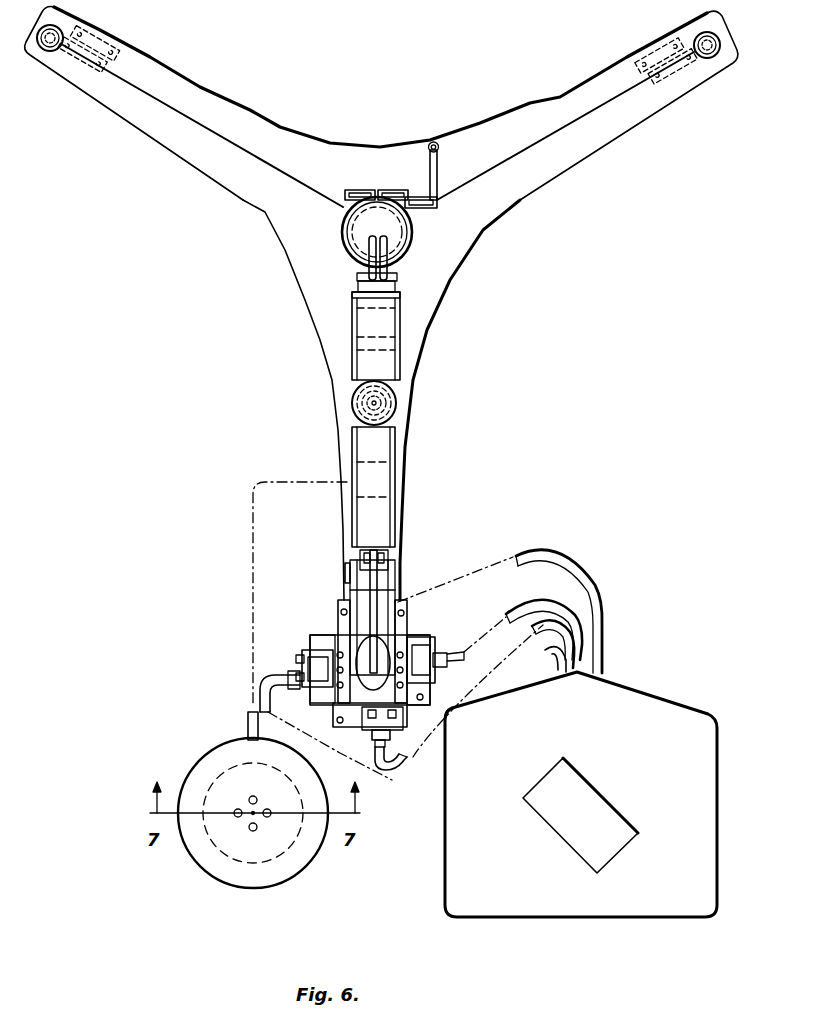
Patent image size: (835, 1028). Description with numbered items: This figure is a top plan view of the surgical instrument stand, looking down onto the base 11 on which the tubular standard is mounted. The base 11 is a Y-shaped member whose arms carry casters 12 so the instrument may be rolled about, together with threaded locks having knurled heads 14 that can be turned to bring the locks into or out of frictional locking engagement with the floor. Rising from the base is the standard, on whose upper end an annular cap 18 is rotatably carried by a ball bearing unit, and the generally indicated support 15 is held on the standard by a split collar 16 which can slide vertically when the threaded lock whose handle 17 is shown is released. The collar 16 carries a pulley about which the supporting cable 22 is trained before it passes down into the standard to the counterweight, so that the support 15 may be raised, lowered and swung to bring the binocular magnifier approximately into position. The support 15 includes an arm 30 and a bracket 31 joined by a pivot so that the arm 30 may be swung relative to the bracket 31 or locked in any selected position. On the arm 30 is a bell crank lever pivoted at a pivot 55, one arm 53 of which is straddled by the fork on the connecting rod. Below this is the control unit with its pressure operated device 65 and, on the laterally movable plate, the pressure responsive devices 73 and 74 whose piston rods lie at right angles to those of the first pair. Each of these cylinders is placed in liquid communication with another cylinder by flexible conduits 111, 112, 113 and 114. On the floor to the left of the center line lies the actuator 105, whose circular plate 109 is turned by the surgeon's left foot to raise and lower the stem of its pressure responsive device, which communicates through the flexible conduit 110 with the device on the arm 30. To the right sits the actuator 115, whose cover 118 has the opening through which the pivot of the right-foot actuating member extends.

The base 11 is at (517, 122).
The casters 12 is at (83, 82).
The knurled heads 14 is at (720, 60).
The support 15 is at (340, 451).
The split collar 16 is at (343, 229).
The handle 17 is at (429, 168).
The annular cap 18 is at (406, 237).
The supporting cable 22 is at (387, 262).
The arm 30 is at (387, 510).
The bracket 31 is at (403, 341).
The arm 53 is at (370, 620).
The pivot 55 is at (344, 572).
The pressure operated device 65 is at (380, 722).
The pressure responsive device 73 is at (321, 694).
The pressure responsive device 74 is at (425, 652).
The actuator 105 is at (269, 894).
The circular plate 109 is at (297, 858).
The flexible conduit 110 is at (247, 725).
The flexible conduit 111 is at (402, 780).
The flexible conduit 112 is at (583, 567).
The flexible conduit 113 is at (256, 692).
The flexible conduit 114 is at (574, 631).
The actuator 115 is at (667, 926).
The cover 118 is at (630, 823).